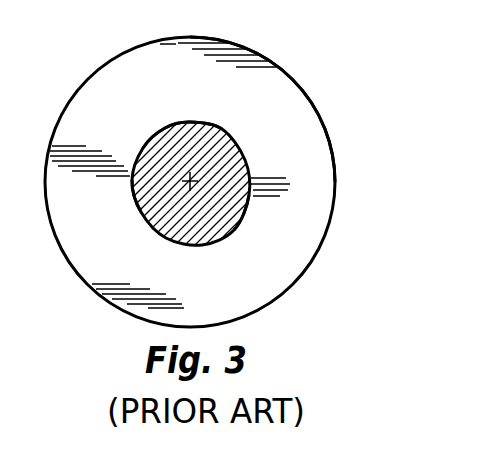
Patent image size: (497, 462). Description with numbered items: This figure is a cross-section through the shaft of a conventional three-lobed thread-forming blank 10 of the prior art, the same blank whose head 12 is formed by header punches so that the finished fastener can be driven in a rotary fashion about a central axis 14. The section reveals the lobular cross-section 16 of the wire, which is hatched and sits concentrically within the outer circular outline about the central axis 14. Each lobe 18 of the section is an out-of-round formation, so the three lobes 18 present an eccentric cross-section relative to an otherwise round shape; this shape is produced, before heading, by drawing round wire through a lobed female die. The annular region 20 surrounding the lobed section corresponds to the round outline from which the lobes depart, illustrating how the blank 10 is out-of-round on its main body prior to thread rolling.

The thread-forming blank 10 is at (300, 77).
The head 12 is at (348, 159).
The central axis 14 is at (191, 179).
The lobular cross-section 16 is at (230, 215).
The lobe 18 is at (182, 121).
The cladding 20 is at (240, 147).